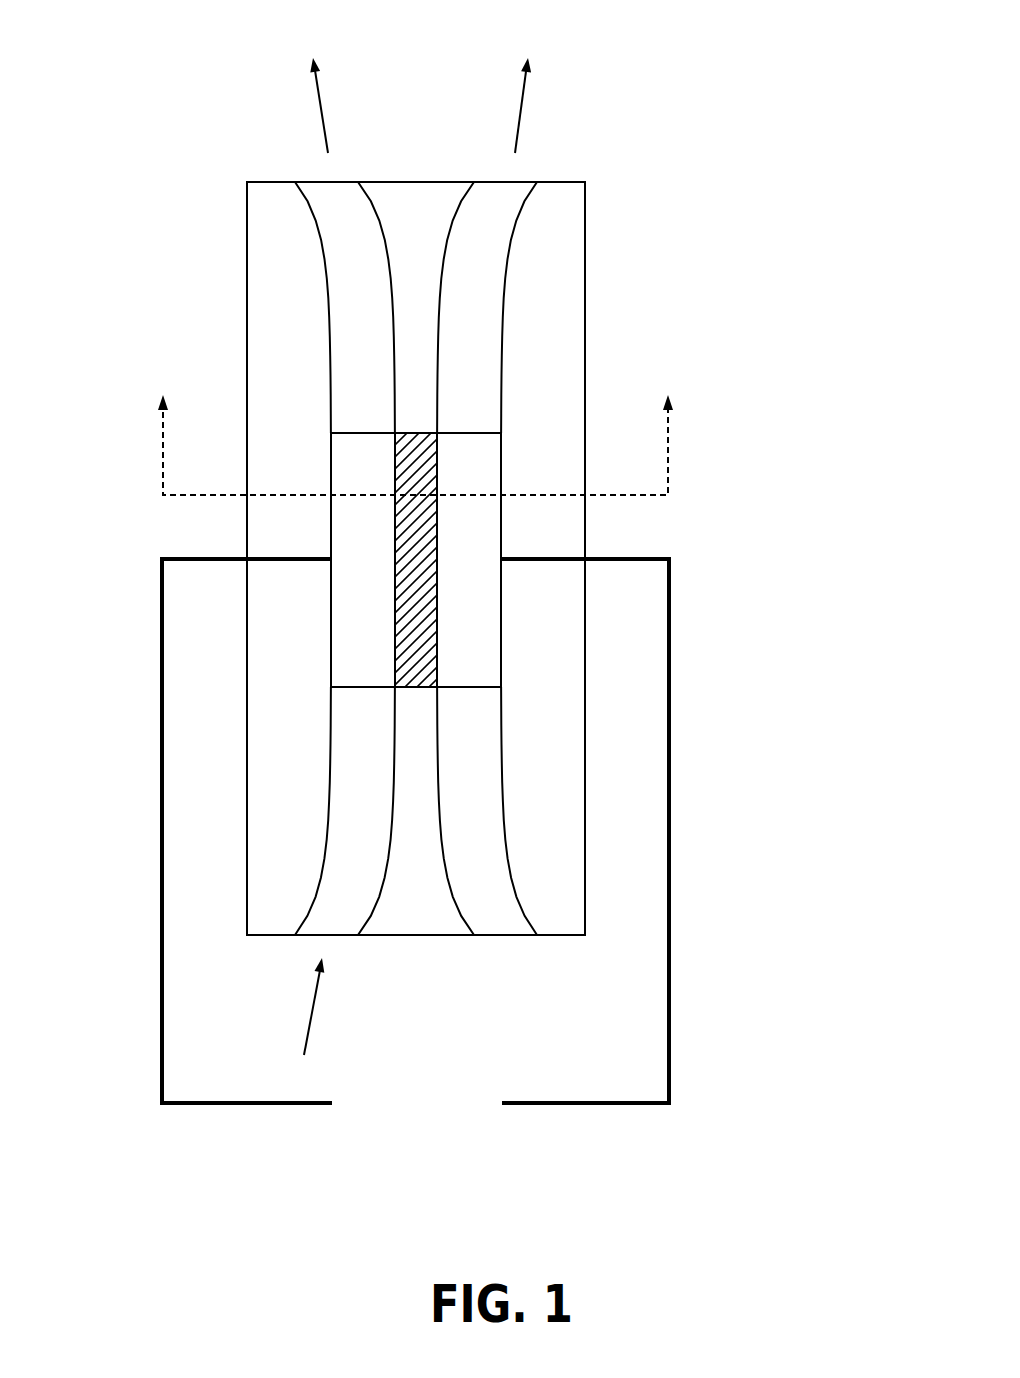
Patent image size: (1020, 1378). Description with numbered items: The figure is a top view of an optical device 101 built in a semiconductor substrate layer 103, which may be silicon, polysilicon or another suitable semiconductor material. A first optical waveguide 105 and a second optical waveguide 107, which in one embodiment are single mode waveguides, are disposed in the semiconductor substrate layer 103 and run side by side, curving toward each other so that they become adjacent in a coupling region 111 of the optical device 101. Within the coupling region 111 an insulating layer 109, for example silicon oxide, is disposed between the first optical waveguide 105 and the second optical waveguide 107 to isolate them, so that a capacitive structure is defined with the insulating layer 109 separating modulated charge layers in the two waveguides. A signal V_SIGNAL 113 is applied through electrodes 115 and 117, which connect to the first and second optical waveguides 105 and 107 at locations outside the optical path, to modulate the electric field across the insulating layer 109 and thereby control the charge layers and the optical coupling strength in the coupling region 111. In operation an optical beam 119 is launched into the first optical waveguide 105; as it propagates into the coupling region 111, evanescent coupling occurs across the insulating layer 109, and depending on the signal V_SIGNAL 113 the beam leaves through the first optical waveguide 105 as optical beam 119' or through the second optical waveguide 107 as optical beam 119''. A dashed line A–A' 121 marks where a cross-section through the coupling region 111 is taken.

The optical device 101 is at (794, 24).
The semiconductor substrate layer 103 is at (585, 279).
The first optical waveguide 105 is at (329, 786).
The second optical waveguide 107 is at (505, 795).
The insulating layer 109 is at (445, 600).
The coupling region 111 is at (331, 626).
The signal V_SIGNAL 113 is at (425, 1157).
The electrode 115 is at (150, 824).
The electrode 117 is at (688, 800).
The optical beam 119 is at (283, 1006).
The optical beam 119' is at (280, 105).
The optical beam 119'' is at (564, 105).
The dashed line A–A' 121 is at (668, 465).